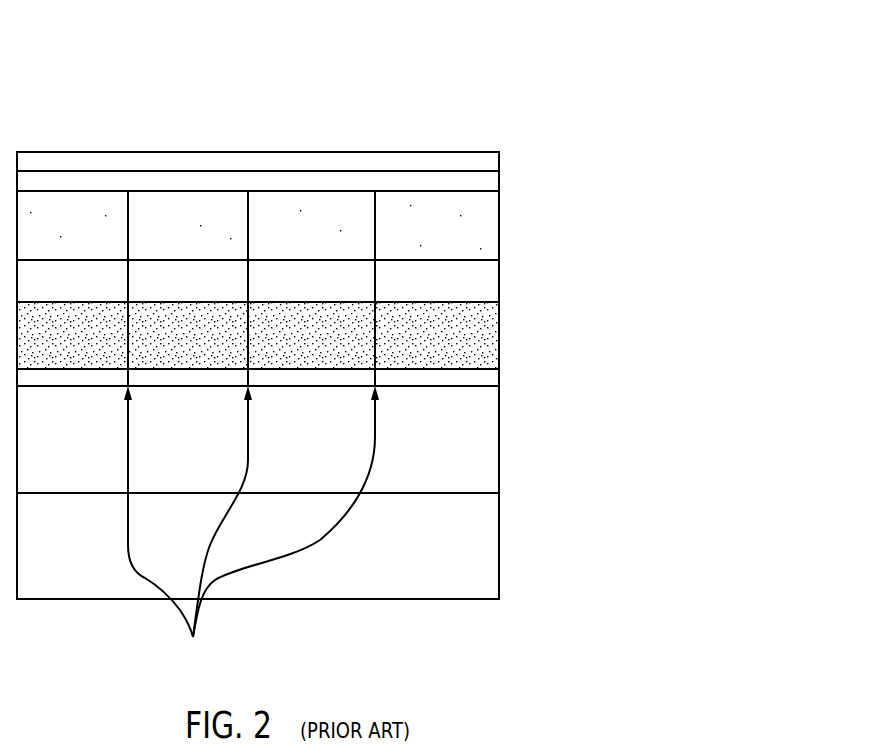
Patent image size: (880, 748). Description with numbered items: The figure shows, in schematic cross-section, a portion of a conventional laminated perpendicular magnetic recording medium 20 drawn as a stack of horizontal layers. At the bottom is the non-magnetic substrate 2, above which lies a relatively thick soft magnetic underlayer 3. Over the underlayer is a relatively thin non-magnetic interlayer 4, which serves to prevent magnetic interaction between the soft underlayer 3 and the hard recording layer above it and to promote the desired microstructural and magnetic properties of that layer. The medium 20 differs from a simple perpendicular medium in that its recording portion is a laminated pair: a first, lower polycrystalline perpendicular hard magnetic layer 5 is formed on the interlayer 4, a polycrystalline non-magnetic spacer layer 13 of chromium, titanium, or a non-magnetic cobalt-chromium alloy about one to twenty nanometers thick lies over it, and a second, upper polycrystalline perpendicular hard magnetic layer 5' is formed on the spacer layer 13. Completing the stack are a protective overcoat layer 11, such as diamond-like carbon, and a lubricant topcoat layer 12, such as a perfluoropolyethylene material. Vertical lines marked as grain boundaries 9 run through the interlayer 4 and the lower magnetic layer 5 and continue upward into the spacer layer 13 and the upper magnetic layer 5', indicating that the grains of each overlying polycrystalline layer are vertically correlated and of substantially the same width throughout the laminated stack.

The perpendicular laminated medium 20 is at (90, 103).
The lubricant topcoat layer 12 is at (516, 155).
The protective overcoat layer 11 is at (517, 180).
The second polycrystalline perpendicular hard magnetic layer 5' is at (366, 288).
The polycrystalline non-magnetic spacer layer 13 is at (517, 277).
The first polycrystalline perpendicular hard magnetic layer 5 is at (363, 336).
The non-magnetic interlayer 4 is at (517, 377).
The soft magnetic underlayer 3 is at (517, 432).
The non-magnetic substrate 2 is at (517, 546).
The grain boundaries 9 is at (211, 526).